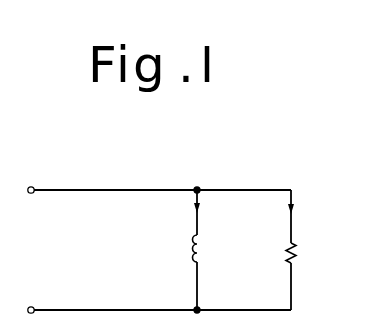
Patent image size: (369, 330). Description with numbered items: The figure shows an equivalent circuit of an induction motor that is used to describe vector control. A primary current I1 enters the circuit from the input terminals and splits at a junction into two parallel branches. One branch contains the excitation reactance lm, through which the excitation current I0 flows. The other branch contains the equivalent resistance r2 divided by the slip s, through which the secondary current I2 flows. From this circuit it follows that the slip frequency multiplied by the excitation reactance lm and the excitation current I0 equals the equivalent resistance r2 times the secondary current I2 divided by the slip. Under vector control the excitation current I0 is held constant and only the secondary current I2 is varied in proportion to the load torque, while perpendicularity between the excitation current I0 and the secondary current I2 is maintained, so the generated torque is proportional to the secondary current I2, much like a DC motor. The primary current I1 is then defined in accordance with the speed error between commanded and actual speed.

The primary current I1 is at (112, 177).
The excitation current I0 is at (207, 212).
The secondary current I2 is at (302, 216).
The excitation reactance lm is at (210, 256).
The equivalent resistance r2 is at (304, 255).